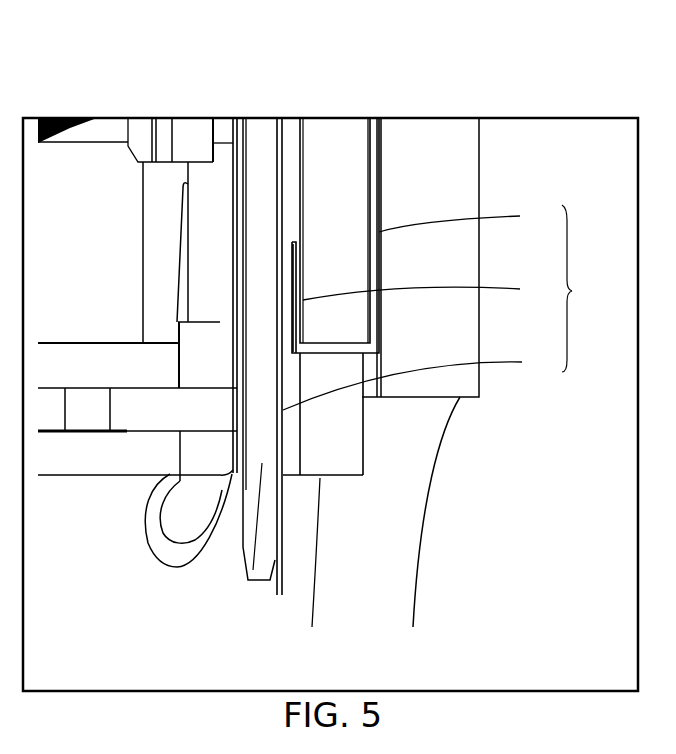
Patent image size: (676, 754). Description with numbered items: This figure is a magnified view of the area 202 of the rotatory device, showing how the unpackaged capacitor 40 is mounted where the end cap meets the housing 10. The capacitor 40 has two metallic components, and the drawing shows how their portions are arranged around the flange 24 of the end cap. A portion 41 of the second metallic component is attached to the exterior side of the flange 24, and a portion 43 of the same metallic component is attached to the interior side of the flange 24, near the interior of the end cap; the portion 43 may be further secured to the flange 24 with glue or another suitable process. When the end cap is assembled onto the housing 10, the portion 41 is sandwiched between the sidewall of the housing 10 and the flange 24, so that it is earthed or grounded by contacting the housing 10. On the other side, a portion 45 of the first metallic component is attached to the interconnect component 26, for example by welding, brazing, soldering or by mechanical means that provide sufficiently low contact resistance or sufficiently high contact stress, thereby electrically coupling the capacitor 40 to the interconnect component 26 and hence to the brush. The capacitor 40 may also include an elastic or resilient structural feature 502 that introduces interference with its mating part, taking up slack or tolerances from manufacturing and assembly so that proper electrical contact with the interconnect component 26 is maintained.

The area 202 is at (430, 72).
The elastic or resilient structural feature 502 is at (284, 251).
The flange 24 is at (330, 183).
The interconnect component 26 is at (248, 583).
The housing 10 is at (368, 576).
The unpackaged capacitor 40 is at (588, 288).
The portion of the second metallic component 41 is at (468, 219).
The portion of the second metallic component 43 is at (430, 291).
The portion of the first metallic component 45 is at (420, 381).